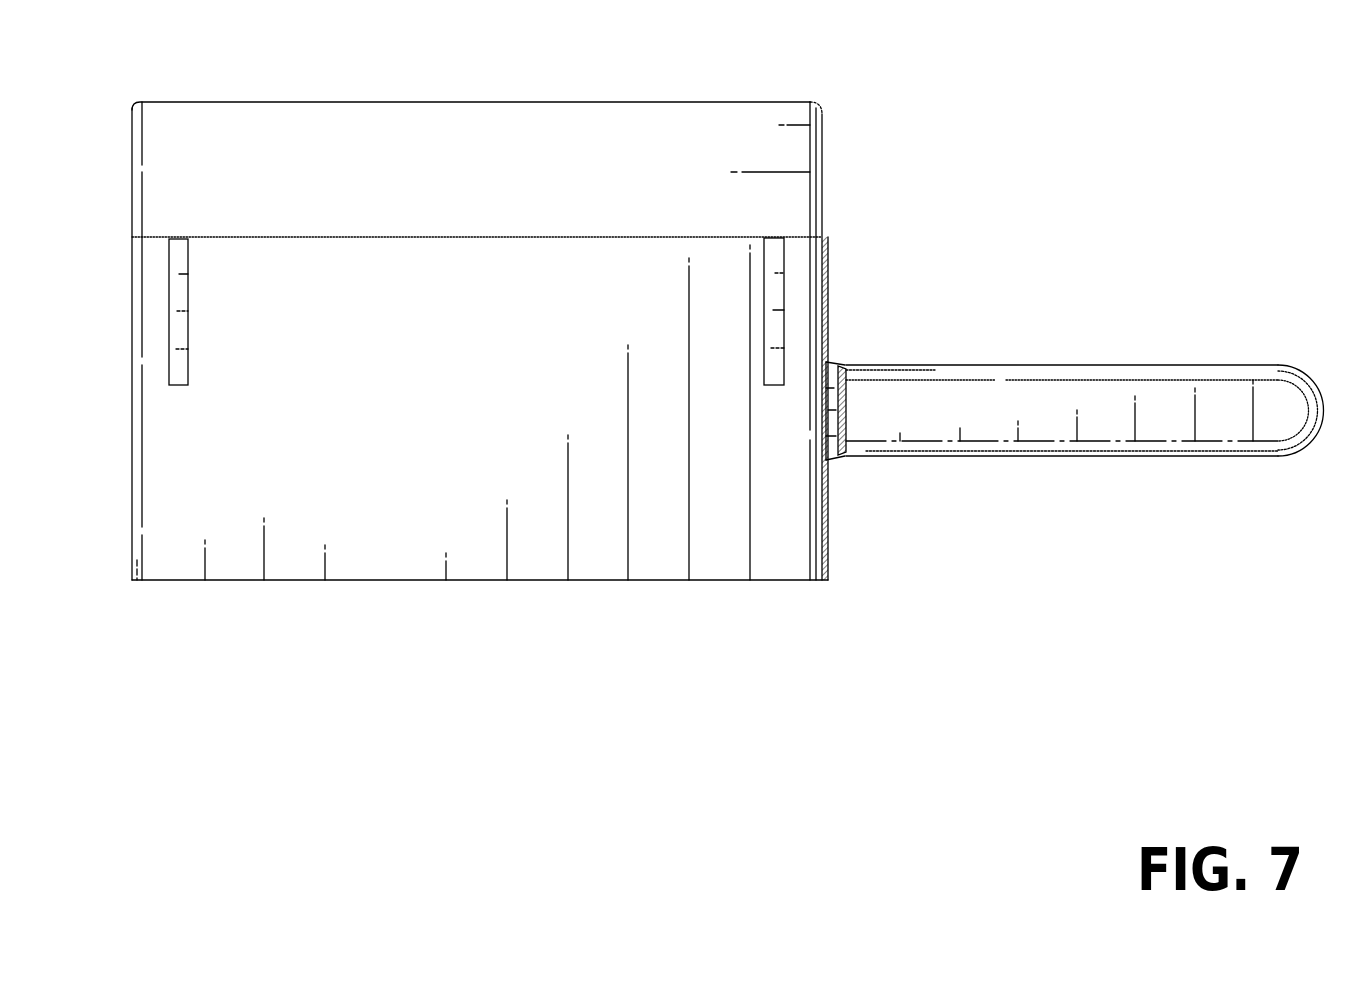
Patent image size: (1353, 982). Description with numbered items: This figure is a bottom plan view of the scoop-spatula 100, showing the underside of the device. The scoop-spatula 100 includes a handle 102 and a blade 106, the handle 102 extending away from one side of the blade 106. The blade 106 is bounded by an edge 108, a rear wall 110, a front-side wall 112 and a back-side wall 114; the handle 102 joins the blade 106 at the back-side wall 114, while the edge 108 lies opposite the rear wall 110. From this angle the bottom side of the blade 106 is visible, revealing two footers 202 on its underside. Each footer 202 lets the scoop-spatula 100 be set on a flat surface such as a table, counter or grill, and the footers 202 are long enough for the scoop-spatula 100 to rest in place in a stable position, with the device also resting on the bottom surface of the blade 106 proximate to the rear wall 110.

The scoop-spatula 100 is at (870, 72).
The handle 102 is at (1215, 465).
The blade 106 is at (428, 510).
The edge 108 is at (361, 583).
The rear wall 110 is at (431, 101).
The front-side wall 112 is at (138, 553).
The back-side wall 114 is at (823, 525).
The footer 202 is at (172, 372).